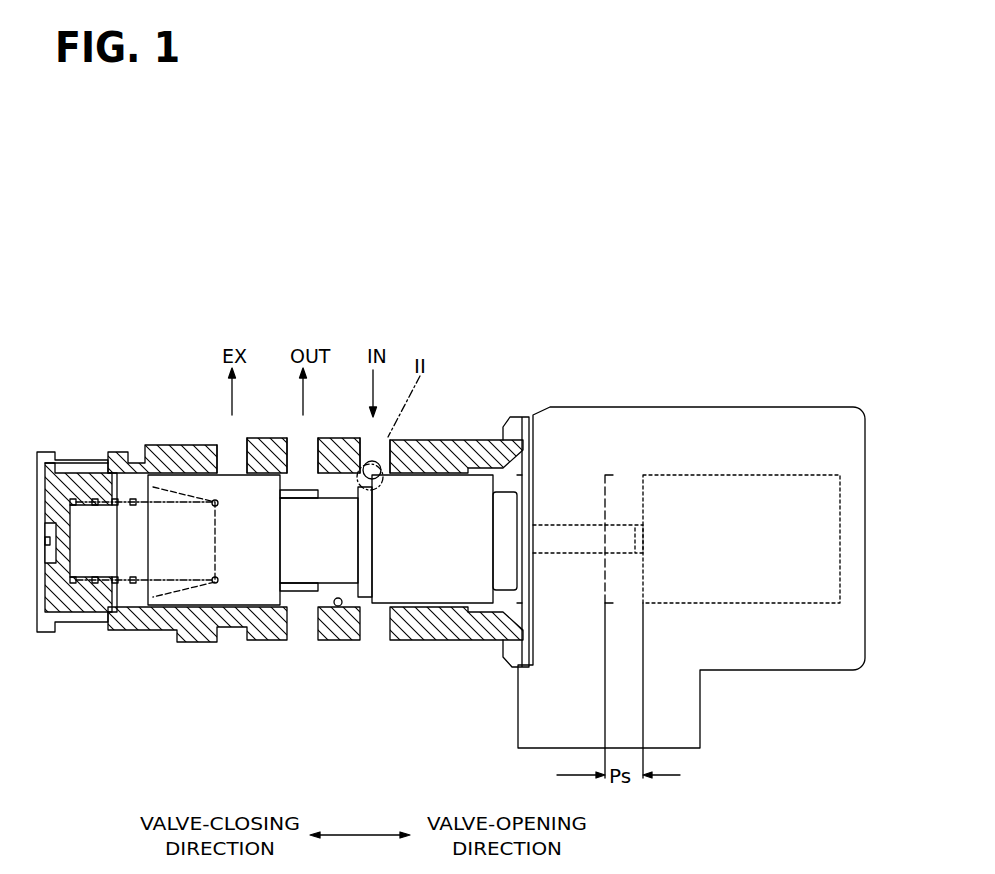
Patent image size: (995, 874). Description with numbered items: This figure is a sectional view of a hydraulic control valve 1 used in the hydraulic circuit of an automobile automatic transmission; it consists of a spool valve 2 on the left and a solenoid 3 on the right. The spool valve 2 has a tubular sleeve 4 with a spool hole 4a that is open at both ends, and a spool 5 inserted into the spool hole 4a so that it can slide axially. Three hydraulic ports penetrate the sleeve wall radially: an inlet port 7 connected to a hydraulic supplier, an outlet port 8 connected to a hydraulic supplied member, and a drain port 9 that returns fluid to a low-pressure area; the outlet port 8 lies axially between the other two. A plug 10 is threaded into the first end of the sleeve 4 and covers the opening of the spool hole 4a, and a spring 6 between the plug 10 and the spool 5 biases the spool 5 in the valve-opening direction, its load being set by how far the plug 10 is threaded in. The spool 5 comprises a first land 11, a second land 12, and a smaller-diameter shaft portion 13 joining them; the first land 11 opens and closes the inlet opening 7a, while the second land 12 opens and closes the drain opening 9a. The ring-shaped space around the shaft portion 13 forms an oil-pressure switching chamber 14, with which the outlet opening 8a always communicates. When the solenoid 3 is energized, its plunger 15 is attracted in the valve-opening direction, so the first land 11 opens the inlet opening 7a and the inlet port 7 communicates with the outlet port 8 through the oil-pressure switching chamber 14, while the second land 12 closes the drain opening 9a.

The hydraulic control valve 1 is at (563, 305).
The spool valve 2 is at (167, 437).
The solenoid 3 is at (757, 407).
The sleeve 4 is at (418, 456).
The spool hole 4a is at (339, 607).
The spool 5 is at (453, 472).
The spring 6 is at (94, 500).
The inlet port 7 is at (376, 440).
The inlet opening 7a is at (363, 440).
The outlet port 8 is at (297, 440).
The outlet opening 8a is at (307, 440).
The drain port 9 is at (225, 440).
The drain opening 9a is at (242, 440).
The plug 10 is at (75, 604).
The first land 11 is at (430, 585).
The second land 12 is at (197, 590).
The shaft portion 13 is at (308, 574).
The oil-pressure switching chamber 14 is at (357, 500).
The plunger 15 is at (787, 603).